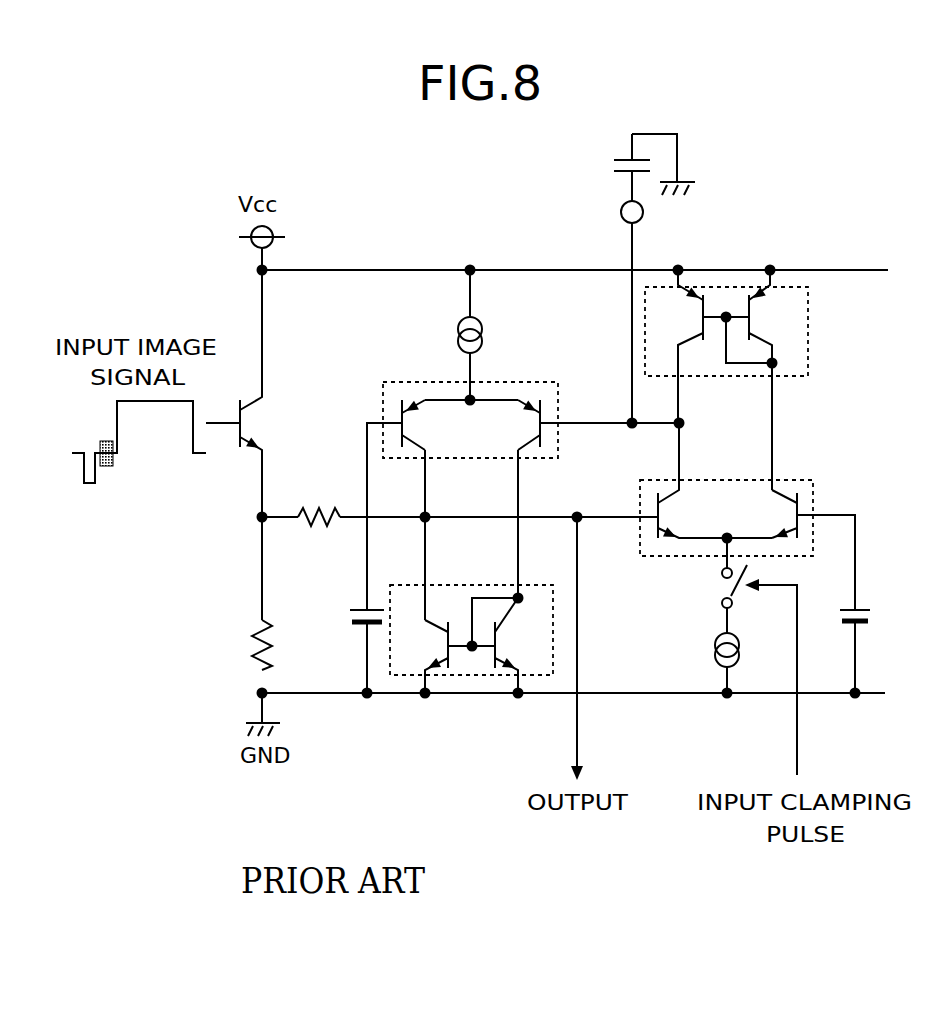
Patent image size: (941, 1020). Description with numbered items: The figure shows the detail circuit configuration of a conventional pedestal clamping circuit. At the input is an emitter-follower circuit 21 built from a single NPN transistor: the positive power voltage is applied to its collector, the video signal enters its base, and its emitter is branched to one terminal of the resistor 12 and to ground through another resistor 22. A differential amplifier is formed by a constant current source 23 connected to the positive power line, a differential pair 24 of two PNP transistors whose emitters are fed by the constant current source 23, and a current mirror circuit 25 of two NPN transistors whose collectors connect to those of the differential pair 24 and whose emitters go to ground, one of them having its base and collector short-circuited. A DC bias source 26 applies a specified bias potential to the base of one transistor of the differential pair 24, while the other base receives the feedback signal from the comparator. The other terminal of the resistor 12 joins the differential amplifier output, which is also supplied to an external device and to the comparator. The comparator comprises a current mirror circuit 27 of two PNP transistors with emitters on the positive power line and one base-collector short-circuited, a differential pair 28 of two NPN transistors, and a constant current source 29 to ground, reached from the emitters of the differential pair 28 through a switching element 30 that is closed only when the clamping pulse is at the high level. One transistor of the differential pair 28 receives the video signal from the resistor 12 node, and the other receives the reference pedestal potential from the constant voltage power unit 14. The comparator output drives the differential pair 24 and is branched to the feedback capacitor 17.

The resistor 12 is at (318, 503).
The constant voltage power unit 14 is at (865, 603).
The feedback capacitor 17 is at (612, 157).
The emitter-follower circuit 21 is at (247, 393).
The resistor 22 is at (258, 639).
The constant current source 23 is at (490, 333).
The differential pair 24 is at (410, 382).
The current mirror circuit 25 is at (458, 676).
The DC bias source 26 is at (357, 606).
The current mirror circuit 27 is at (808, 348).
The differential pair 28 is at (813, 490).
The constant current source 29 is at (710, 649).
The switching element 30 is at (722, 593).